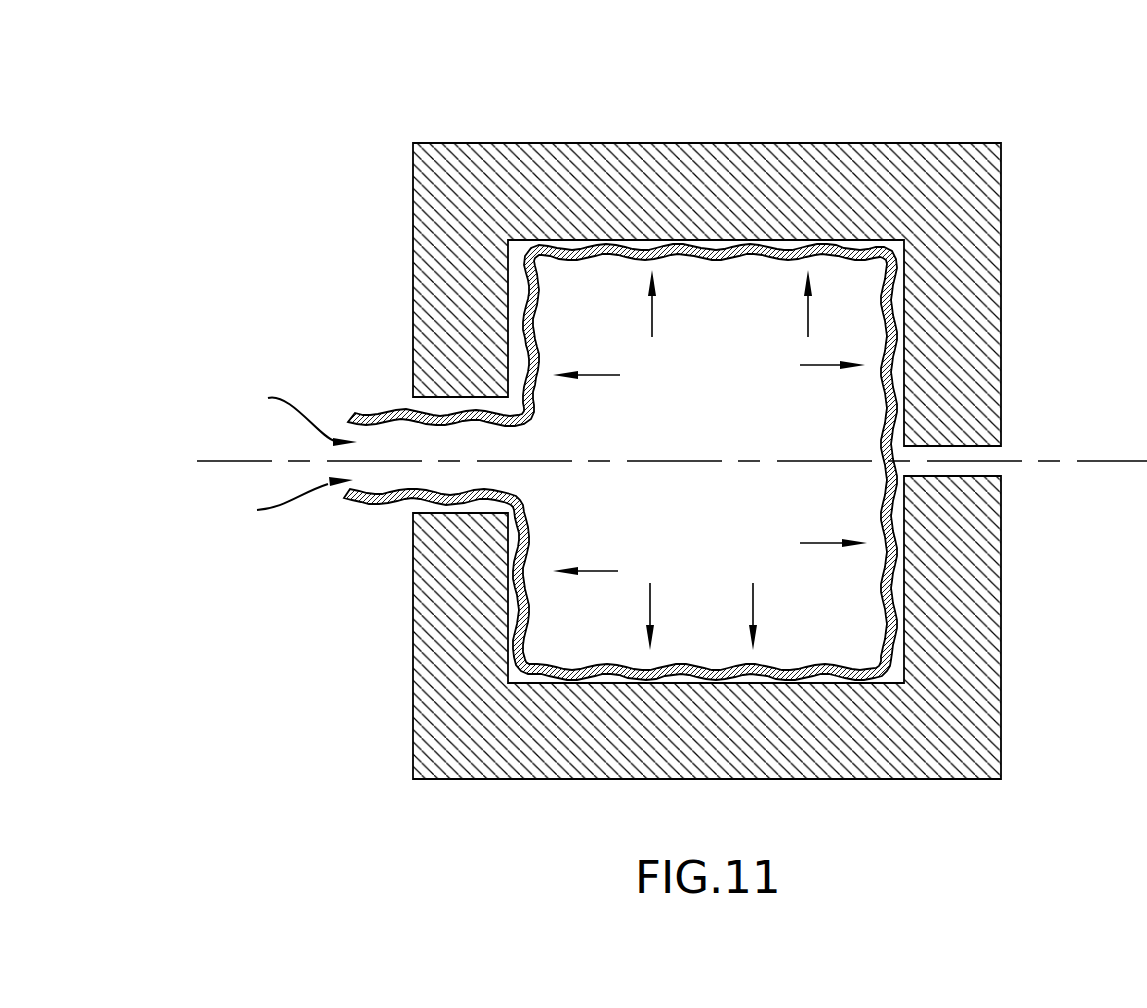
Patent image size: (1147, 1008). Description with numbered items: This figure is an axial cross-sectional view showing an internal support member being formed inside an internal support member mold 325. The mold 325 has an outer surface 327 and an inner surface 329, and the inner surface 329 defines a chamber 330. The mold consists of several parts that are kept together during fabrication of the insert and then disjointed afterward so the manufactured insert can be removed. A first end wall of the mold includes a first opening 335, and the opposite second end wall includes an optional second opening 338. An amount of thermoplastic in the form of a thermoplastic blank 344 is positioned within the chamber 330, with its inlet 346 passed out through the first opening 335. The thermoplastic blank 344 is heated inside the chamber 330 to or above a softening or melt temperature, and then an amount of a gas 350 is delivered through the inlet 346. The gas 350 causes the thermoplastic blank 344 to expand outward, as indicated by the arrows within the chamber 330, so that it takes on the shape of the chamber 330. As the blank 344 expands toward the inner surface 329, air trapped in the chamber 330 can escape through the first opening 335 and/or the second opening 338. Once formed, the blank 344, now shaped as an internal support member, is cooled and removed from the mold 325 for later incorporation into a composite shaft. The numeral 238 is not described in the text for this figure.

The internal support member mold 325 is at (651, 403).
The outer surface 327 is at (703, 143).
The inner surface 329 is at (573, 685).
The chamber 330 is at (744, 375).
The first opening 335 is at (417, 408).
The second opening 338 is at (990, 474).
The thermoplastic blank 344 is at (837, 667).
The inlet 346 is at (357, 425).
The gas 350 is at (268, 398).
The fuel injector 238 is at (423, 513).